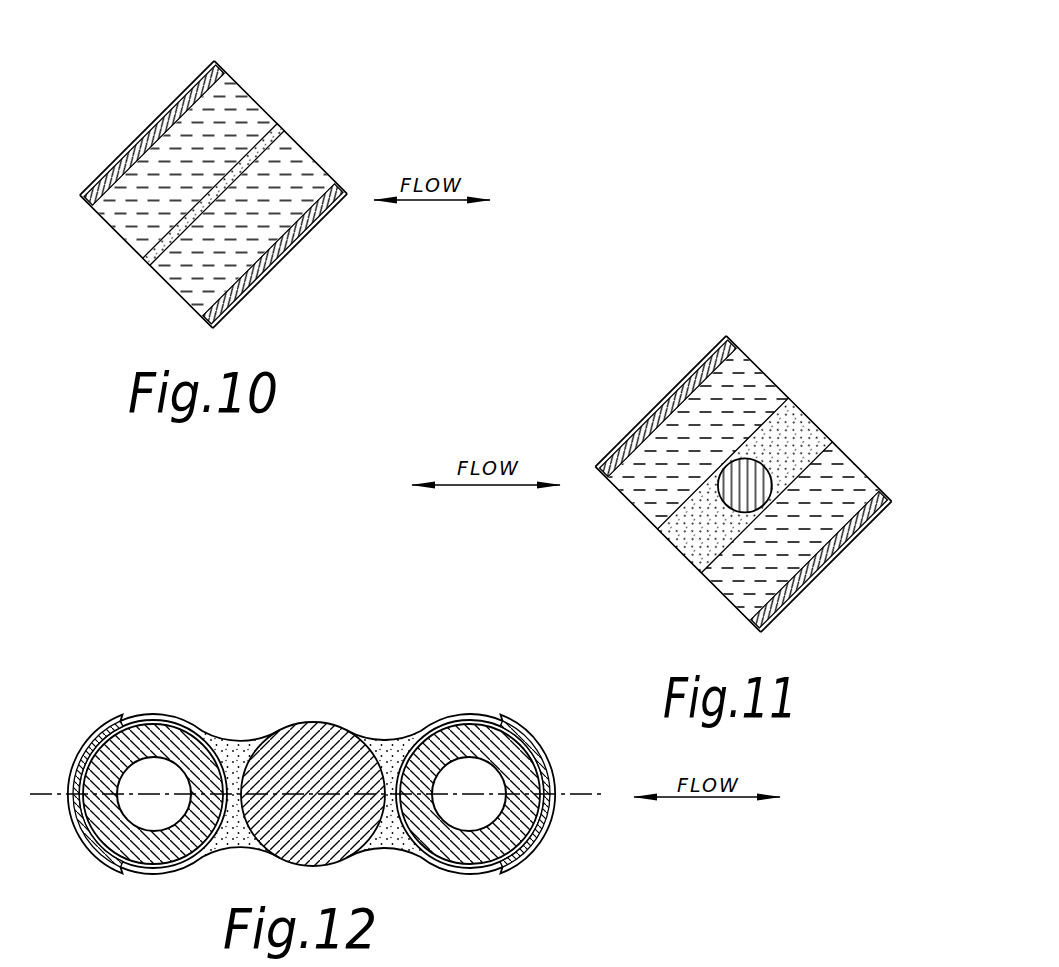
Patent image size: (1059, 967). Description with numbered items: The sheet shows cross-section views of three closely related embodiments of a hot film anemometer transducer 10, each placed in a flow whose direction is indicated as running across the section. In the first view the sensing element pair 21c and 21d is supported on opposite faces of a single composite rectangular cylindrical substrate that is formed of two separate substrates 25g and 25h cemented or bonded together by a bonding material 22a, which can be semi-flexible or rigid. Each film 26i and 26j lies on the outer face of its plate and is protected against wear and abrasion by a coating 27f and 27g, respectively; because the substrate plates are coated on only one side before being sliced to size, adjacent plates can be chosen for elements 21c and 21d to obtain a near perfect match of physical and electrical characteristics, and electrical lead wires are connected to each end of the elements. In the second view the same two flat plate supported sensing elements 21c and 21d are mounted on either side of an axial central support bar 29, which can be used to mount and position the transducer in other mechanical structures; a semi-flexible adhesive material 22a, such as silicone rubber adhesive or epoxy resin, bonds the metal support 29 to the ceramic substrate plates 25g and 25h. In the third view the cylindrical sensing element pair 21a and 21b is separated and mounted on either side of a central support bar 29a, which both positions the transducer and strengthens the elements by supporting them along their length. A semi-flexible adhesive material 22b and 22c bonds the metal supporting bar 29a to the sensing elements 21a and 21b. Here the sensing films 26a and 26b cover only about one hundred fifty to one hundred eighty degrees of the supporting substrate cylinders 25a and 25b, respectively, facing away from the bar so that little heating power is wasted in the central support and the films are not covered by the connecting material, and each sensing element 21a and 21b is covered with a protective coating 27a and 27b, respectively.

In FIG. 10, the transducer 10 is at (213, 200).
In FIG. 12, the sensing element 21a is at (173, 794).
In FIG. 12, the sensing element 21b is at (451, 794).
In FIG. 10, the sensing element 21c is at (180, 161).
In FIG. 11, the sensing element 21c is at (702, 443).
In FIG. 10, the sensing element 21d is at (246, 227).
In FIG. 11, the sensing element 21d is at (785, 526).
In FIG. 10, the bonding material 22a is at (128, 256).
In FIG. 11, the bonding material 22a is at (745, 485).
In FIG. 12, the semi-flexible adhesive material 22b is at (257, 794).
In FIG. 12, the semi-flexible adhesive material 22c is at (367, 794).
In FIG. 12, the supporting substrate cylinder 25a is at (153, 794).
In FIG. 12, the supporting substrate cylinder 25b is at (470, 794).
In FIG. 10, the substrate 25g is at (184, 165).
In FIG. 11, the substrate 25g is at (698, 439).
In FIG. 10, the substrate 25h is at (242, 223).
In FIG. 11, the substrate 25h is at (790, 531).
In FIG. 12, the sensing film 26a is at (98, 794).
In FIG. 12, the sensing film 26b is at (525, 794).
In FIG. 10, the film 26i is at (154, 135).
In FIG. 11, the film 26i is at (668, 408).
In FIG. 10, the film 26j is at (273, 254).
In FIG. 11, the film 26j is at (819, 559).
In FIG. 12, the protective coating 27a is at (153, 794).
In FIG. 12, the protective coating 27b is at (470, 794).
In FIG. 10, the coating 27f is at (147, 128).
In FIG. 11, the coating 27f is at (660, 401).
In FIG. 10, the coating 27g is at (280, 261).
In FIG. 11, the coating 27g is at (826, 566).
In FIG. 11, the central support bar 29 is at (745, 485).
In FIG. 12, the central support bar 29a is at (313, 794).